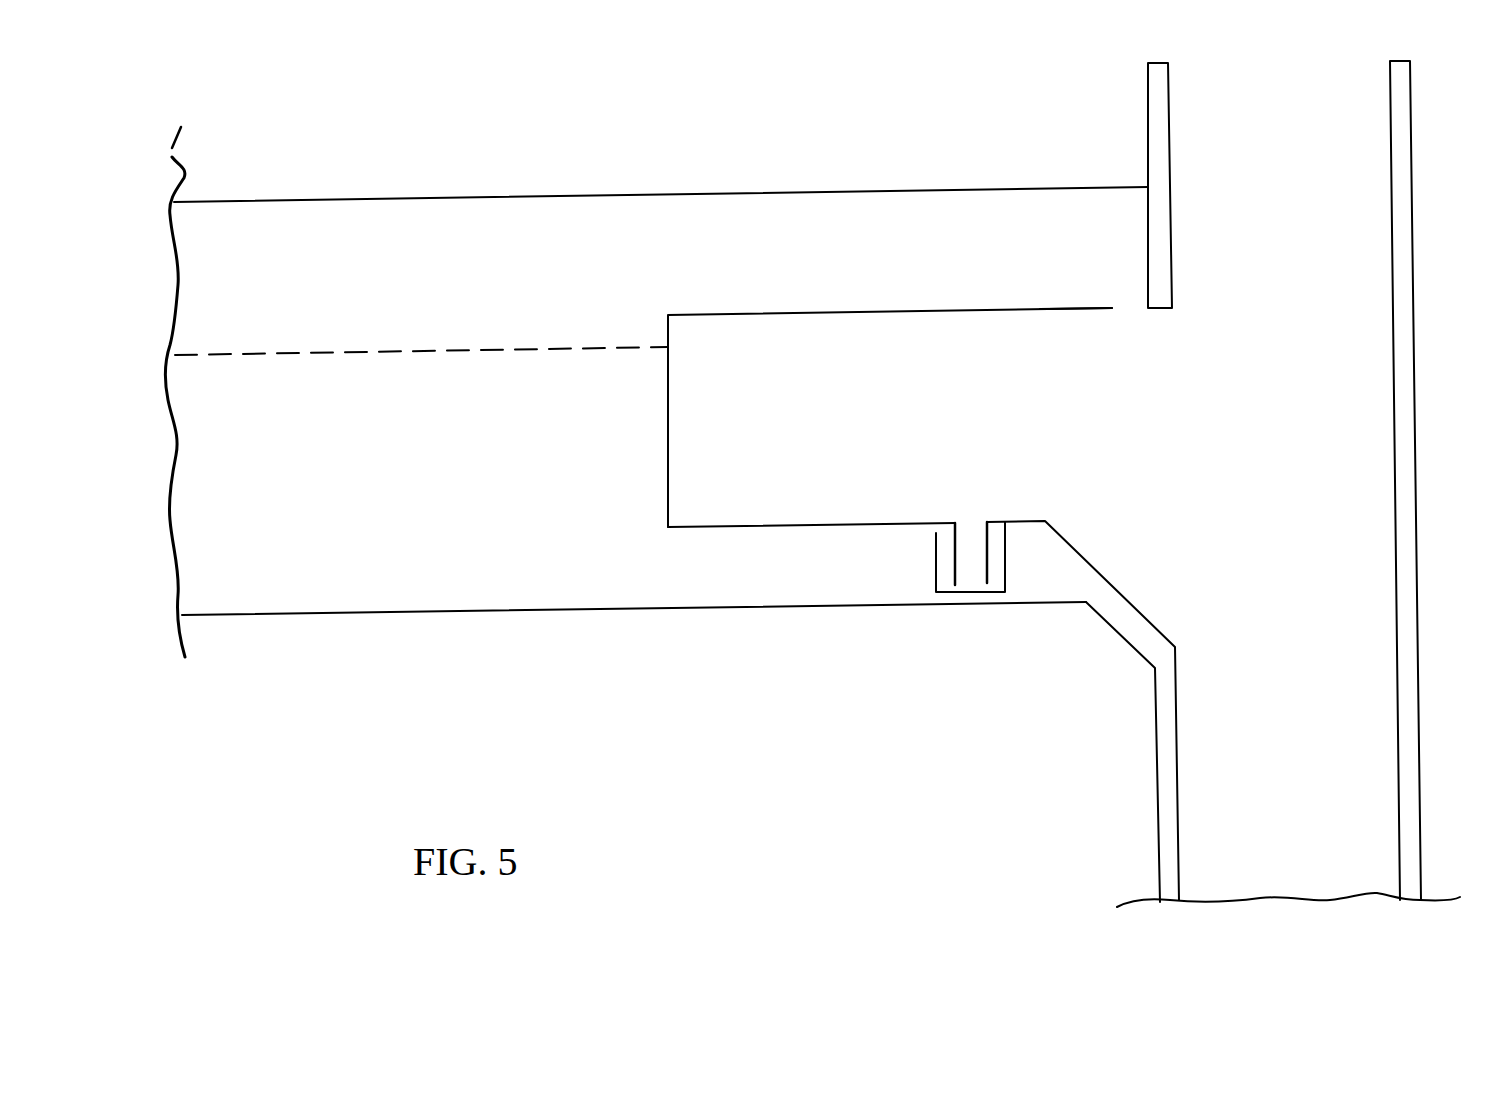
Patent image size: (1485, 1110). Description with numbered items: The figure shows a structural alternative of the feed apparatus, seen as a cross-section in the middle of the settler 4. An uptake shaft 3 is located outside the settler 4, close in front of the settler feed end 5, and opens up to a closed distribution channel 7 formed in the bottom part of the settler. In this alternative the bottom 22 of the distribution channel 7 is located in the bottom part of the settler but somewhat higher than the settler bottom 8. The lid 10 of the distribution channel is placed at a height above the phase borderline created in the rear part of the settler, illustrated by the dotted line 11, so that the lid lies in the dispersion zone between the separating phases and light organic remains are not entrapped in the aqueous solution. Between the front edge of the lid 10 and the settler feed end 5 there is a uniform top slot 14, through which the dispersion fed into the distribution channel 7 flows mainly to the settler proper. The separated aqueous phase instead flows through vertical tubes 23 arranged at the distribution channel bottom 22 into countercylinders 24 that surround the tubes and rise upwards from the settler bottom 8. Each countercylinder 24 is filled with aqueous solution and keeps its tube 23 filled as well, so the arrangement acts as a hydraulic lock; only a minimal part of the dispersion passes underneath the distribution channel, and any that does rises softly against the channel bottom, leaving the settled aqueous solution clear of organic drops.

The uptake shaft 3 is at (1370, 248).
The settler 4 is at (516, 198).
The settler feed end 5 is at (1171, 128).
The distribution channel 7 is at (710, 515).
The settler bottom 8 is at (283, 616).
The lid of the distribution channel 10 is at (762, 313).
The phase borderline 11 is at (222, 360).
The top slot 14 is at (1127, 302).
The bottom of the distribution channel 22 is at (757, 523).
The vertical tube 23 is at (970, 533).
The countercylinder 24 is at (945, 580).